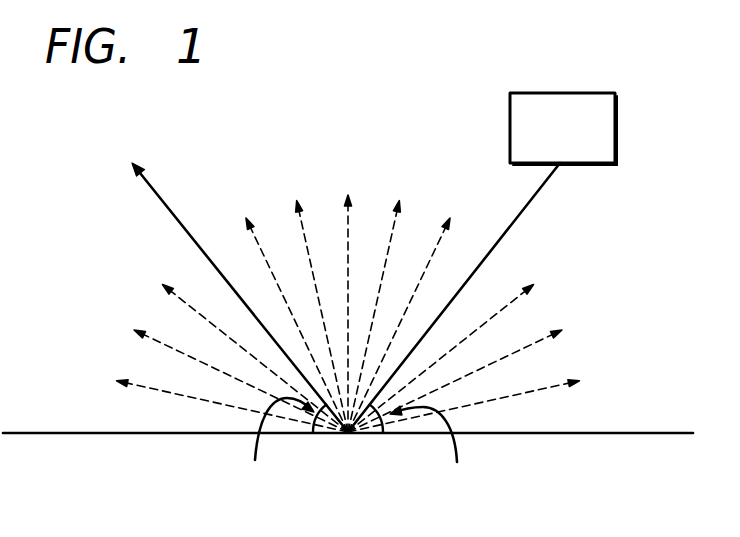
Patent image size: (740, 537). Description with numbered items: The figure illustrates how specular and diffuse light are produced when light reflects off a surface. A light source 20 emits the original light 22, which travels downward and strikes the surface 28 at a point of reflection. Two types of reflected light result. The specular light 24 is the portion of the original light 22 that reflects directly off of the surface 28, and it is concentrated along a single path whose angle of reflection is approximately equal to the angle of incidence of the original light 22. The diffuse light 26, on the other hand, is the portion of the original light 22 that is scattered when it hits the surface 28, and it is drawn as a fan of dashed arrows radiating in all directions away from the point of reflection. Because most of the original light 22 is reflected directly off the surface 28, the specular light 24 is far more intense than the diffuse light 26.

The light source 20 is at (510, 128).
The original light 22 is at (517, 220).
The specular light 24 is at (178, 218).
The diffuse light 26 is at (552, 387).
The surface 28 is at (630, 432).